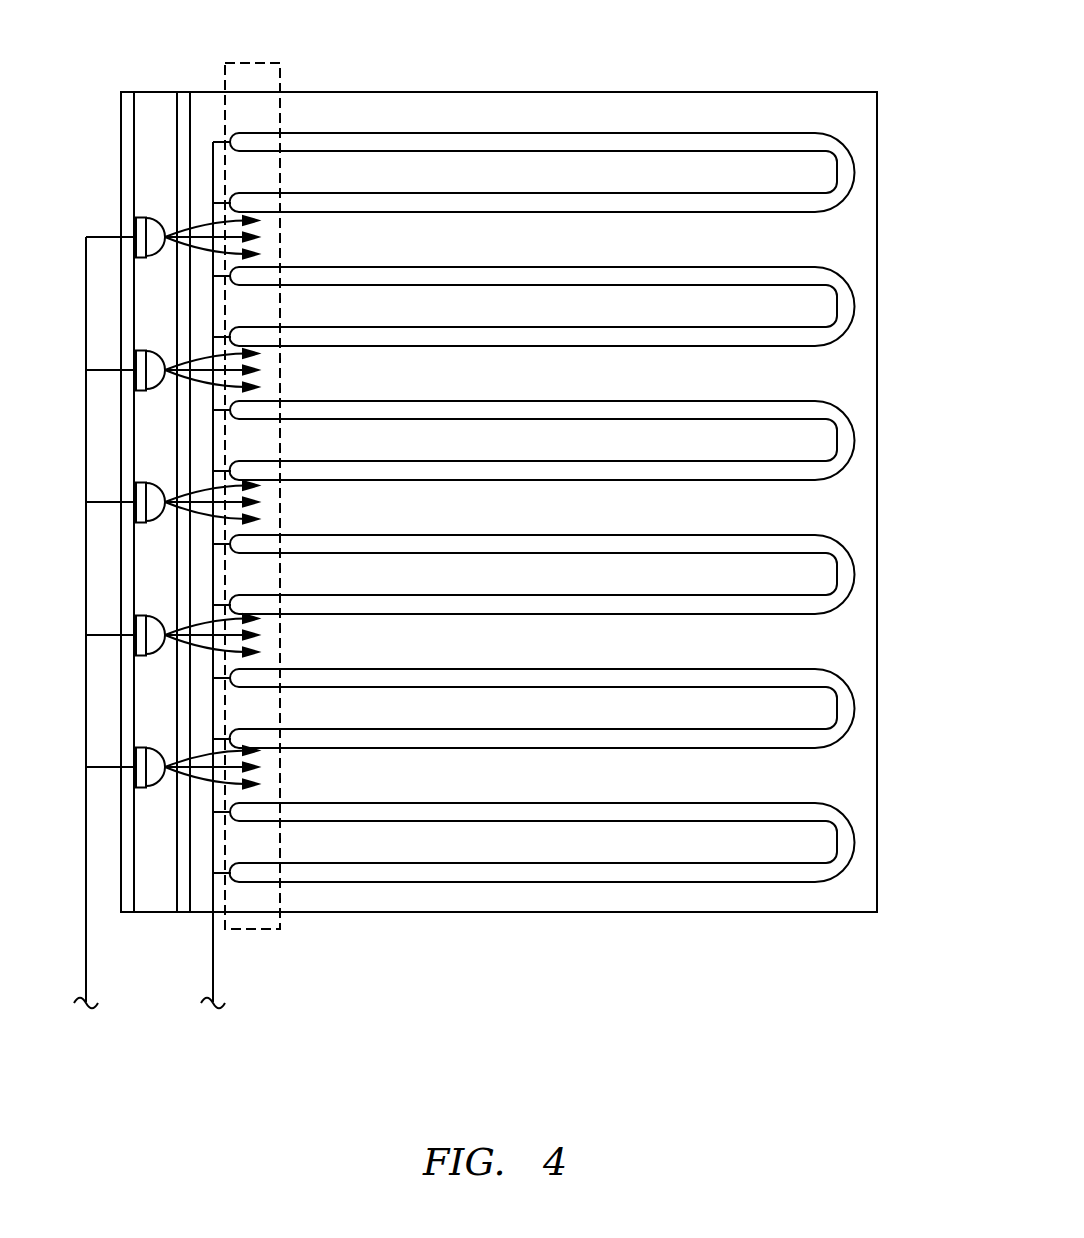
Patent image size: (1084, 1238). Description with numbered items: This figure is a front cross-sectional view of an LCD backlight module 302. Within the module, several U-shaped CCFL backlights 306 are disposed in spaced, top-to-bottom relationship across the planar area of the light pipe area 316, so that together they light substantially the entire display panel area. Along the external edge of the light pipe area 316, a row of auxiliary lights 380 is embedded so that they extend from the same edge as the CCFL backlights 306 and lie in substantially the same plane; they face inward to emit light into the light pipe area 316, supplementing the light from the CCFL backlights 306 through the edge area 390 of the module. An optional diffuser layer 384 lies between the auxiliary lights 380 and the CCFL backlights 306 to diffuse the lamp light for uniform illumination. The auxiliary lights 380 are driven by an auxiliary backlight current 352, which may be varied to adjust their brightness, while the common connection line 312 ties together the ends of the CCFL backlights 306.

The LCD backlight module 302 is at (717, 93).
The U-shaped CCFL backlight 306 is at (847, 172).
The common bus line 312 is at (214, 972).
The light pipe area 316 is at (153, 103).
The auxiliary backlight current 352 is at (86, 983).
The auxiliary light 380 is at (157, 202).
The diffuser layer 384 is at (185, 97).
The edge area 390 is at (252, 63).